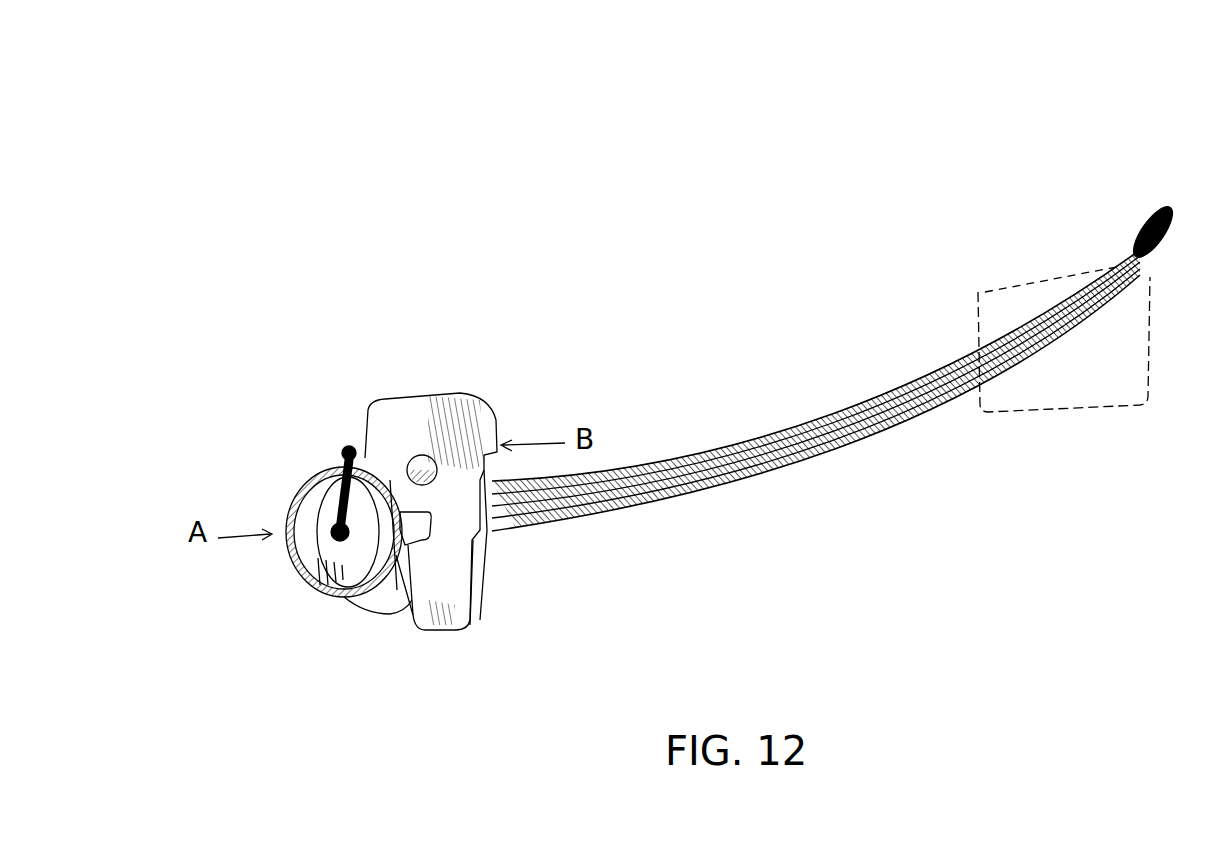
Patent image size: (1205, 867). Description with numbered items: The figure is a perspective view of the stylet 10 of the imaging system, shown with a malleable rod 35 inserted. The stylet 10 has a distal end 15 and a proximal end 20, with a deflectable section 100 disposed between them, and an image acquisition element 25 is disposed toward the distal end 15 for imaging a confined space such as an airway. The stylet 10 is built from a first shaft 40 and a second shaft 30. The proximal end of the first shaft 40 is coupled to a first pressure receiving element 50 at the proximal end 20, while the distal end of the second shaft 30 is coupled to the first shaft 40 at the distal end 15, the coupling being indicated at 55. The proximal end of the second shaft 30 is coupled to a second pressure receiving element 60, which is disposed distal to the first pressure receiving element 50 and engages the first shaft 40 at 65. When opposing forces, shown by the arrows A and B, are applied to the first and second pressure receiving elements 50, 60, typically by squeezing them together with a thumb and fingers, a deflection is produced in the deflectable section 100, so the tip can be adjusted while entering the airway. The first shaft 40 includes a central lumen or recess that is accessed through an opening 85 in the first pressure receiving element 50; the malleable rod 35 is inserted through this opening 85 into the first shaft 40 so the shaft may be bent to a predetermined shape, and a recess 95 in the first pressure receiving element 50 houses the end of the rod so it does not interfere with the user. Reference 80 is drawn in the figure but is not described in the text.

The stylet 10 is at (738, 312).
The distal end 15 is at (1150, 170).
The proximal end 20 is at (337, 293).
The image acquisition element 25 is at (1147, 228).
The second shaft 30 is at (877, 396).
The malleable rod 35 is at (351, 447).
The first shaft 40 is at (892, 430).
The first pressure receiving element 50 is at (316, 580).
The coupling of the second shaft to the first shaft 55 is at (1140, 262).
The second pressure receiving element 60 is at (440, 626).
The engagement of the second pressure receiving element with the first shaft 65 is at (413, 532).
The pivot hole 80 is at (423, 455).
The opening 85 is at (330, 535).
The recess 95 is at (332, 518).
The deflectable section 100 is at (1060, 413).